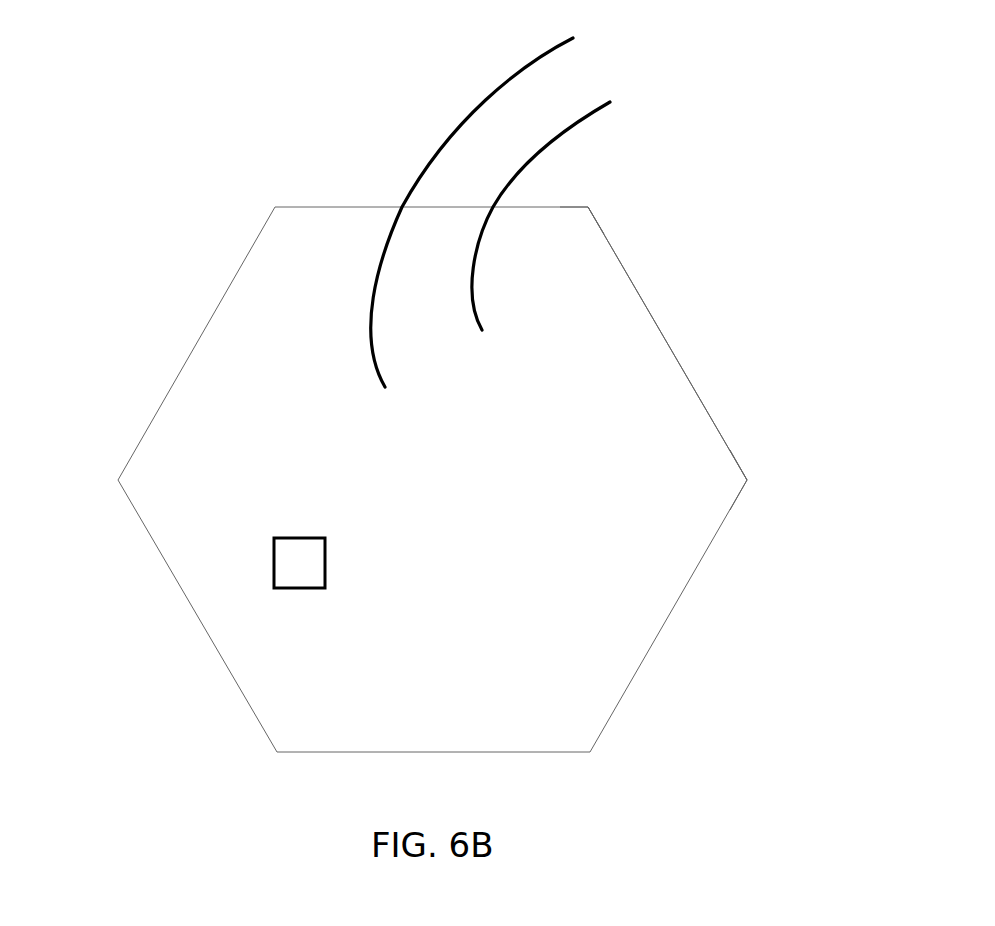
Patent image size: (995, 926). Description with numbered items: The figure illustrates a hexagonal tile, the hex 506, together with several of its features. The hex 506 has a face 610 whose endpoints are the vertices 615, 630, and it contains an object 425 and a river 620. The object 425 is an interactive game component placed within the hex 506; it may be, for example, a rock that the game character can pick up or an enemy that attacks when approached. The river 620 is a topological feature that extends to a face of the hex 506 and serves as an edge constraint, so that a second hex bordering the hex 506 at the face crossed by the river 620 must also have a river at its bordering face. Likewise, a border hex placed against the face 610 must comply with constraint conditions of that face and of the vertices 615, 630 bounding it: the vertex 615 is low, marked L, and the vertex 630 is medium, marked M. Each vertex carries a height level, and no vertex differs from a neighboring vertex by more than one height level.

The hex 506 is at (88, 263).
The face 610 is at (648, 310).
The vertex 615 is at (588, 207).
The river 620 is at (426, 164).
The vertex 630 is at (705, 460).
The object 425 is at (325, 553).